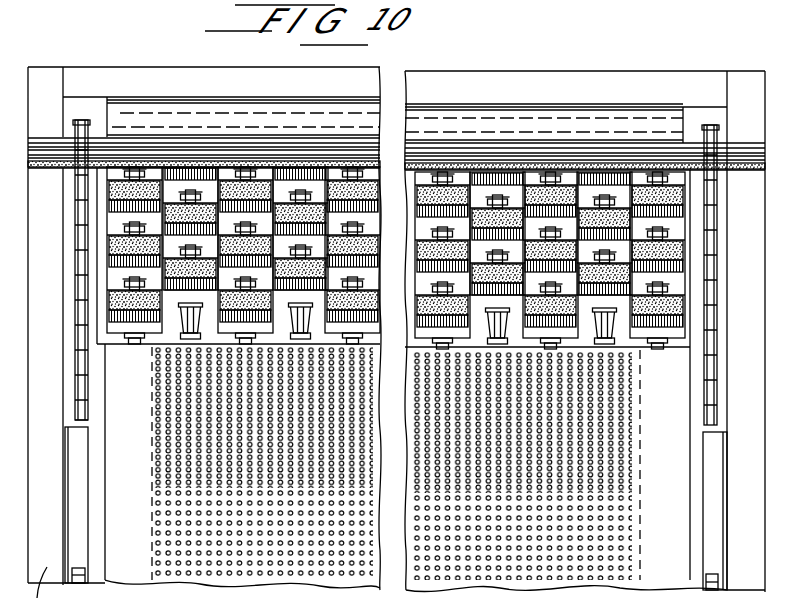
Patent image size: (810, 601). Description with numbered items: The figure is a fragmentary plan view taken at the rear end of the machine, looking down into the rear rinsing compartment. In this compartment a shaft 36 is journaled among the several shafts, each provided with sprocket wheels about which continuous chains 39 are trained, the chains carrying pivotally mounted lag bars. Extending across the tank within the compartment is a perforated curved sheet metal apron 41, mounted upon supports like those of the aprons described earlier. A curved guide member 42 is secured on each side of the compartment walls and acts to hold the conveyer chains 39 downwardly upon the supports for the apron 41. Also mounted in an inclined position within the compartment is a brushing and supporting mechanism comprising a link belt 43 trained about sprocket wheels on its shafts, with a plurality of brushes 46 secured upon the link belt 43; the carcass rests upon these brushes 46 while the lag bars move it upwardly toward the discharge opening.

The shaft 36 is at (107, 167).
The brushes 46 is at (112, 277).
The continuous chains 39 is at (79, 356).
The link belt 43 is at (190, 312).
The perforated curved sheet metal apron 41 is at (150, 469).
The curved guide member 42 is at (76, 508).